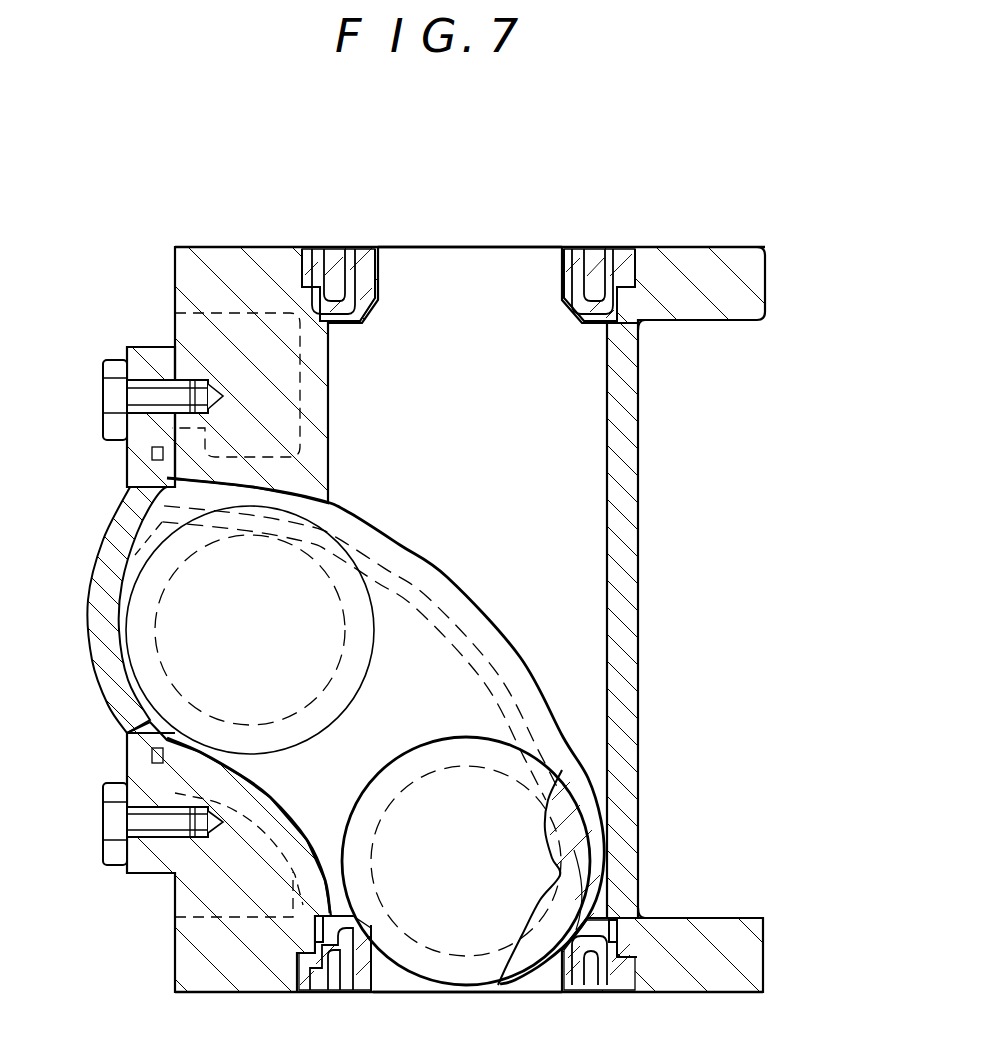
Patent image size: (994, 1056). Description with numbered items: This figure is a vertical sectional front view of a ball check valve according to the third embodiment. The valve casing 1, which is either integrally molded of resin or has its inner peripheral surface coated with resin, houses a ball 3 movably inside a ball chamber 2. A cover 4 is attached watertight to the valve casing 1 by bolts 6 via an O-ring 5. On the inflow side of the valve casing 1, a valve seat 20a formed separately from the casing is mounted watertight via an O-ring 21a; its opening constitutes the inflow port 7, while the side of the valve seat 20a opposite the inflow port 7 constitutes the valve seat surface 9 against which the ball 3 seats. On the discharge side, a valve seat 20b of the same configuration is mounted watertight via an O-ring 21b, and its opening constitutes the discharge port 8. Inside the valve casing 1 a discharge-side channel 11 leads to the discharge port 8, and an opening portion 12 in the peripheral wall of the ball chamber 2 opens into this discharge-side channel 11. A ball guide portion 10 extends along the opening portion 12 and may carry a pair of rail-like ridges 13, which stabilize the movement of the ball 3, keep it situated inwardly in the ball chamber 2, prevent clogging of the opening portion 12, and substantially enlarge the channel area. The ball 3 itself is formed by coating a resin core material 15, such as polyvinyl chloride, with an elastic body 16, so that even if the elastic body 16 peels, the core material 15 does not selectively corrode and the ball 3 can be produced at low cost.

The valve casing 1 is at (625, 477).
The ball chamber 2 is at (422, 643).
The ball 3 is at (88, 592).
The cover 4 is at (107, 682).
The O-ring 5 is at (130, 757).
The bolts 6 is at (103, 367).
The inflow port 7 is at (407, 993).
The discharge port 8 is at (466, 247).
The valve seat surface 9 is at (377, 930).
The ball guide portion 10 is at (644, 635).
The discharge-side channel 11 is at (534, 381).
The opening portion 12 is at (520, 657).
The rail-like ridges 13 is at (463, 637).
The core material 15 is at (550, 853).
The elastic body 16 is at (580, 885).
The valve seat 20a is at (568, 968).
The valve seat 20b is at (575, 263).
The O-ring 21a is at (652, 963).
The O-ring 21b is at (342, 262).